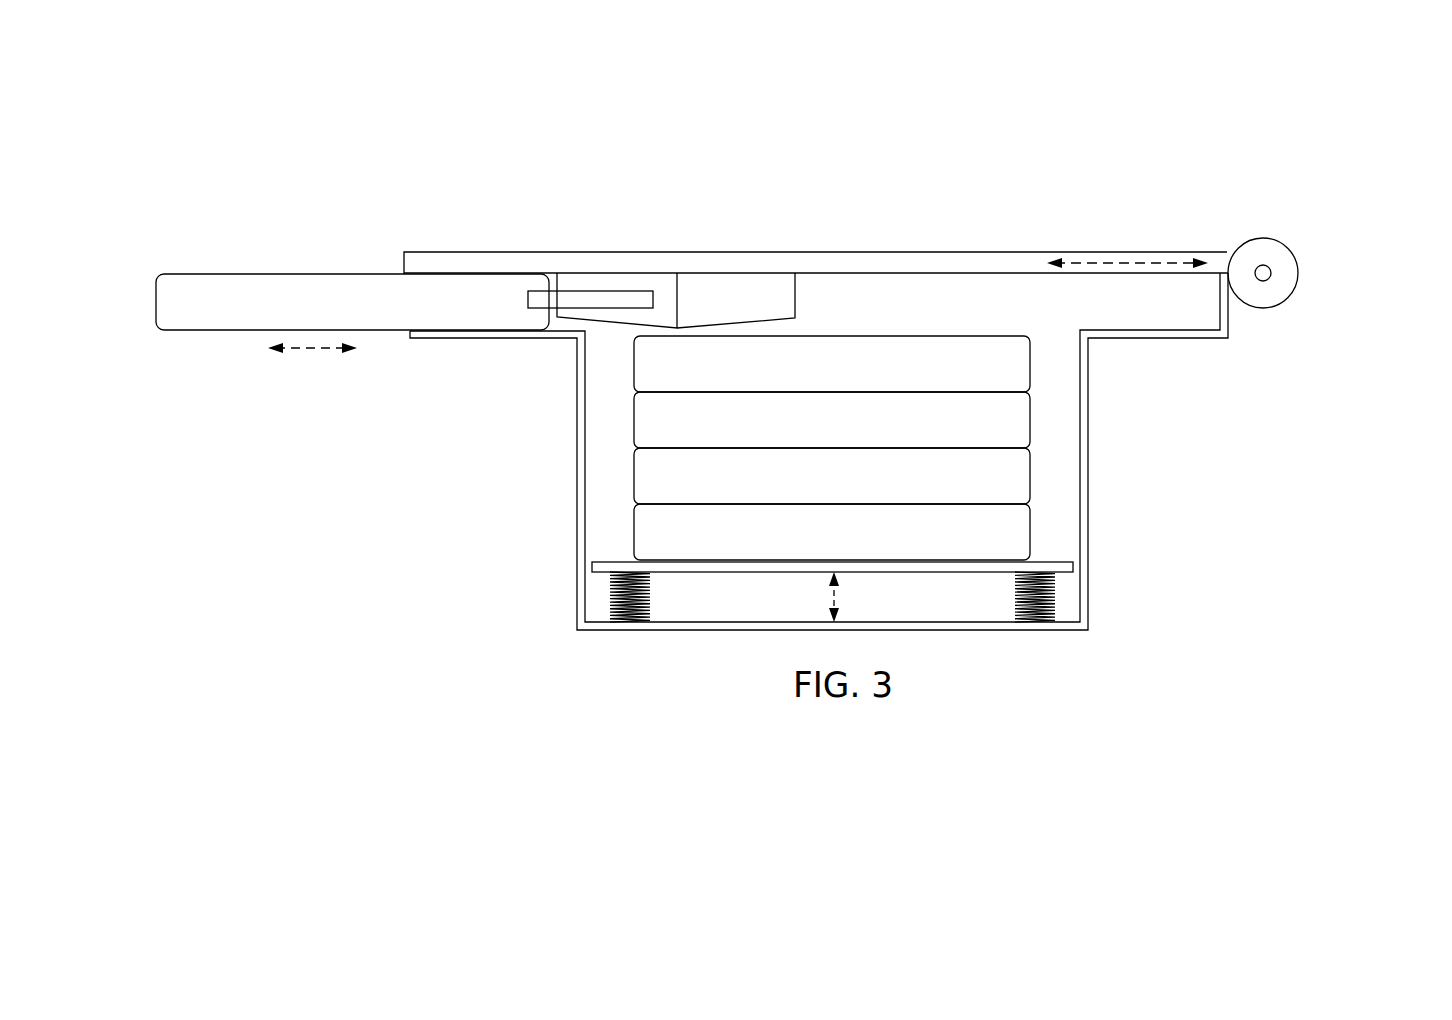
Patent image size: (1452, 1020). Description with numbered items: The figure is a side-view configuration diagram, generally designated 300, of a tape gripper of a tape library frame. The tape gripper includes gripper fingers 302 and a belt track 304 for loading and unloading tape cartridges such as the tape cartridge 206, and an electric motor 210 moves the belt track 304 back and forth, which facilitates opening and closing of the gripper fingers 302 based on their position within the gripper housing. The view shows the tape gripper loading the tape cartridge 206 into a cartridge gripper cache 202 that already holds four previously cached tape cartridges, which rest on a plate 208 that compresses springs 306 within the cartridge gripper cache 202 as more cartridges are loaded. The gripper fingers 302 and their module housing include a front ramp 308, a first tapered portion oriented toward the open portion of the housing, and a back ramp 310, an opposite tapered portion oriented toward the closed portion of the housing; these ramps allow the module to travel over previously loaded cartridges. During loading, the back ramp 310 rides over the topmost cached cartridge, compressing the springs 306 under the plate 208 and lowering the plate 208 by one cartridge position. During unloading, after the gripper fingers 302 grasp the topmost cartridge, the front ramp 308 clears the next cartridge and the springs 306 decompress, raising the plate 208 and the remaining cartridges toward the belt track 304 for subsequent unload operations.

The tape gripper side view configuration 300 is at (1152, 99).
The cartridge gripper cache 202 is at (1090, 478).
The tape cartridge 206 is at (289, 288).
The plate 208 is at (597, 567).
The electric motor 210 is at (1293, 257).
The gripper fingers 302 is at (575, 298).
The belt track 304 is at (892, 262).
The springs 306 is at (1127, 613).
The front ramp 308 is at (630, 272).
The back ramp 310 is at (762, 277).